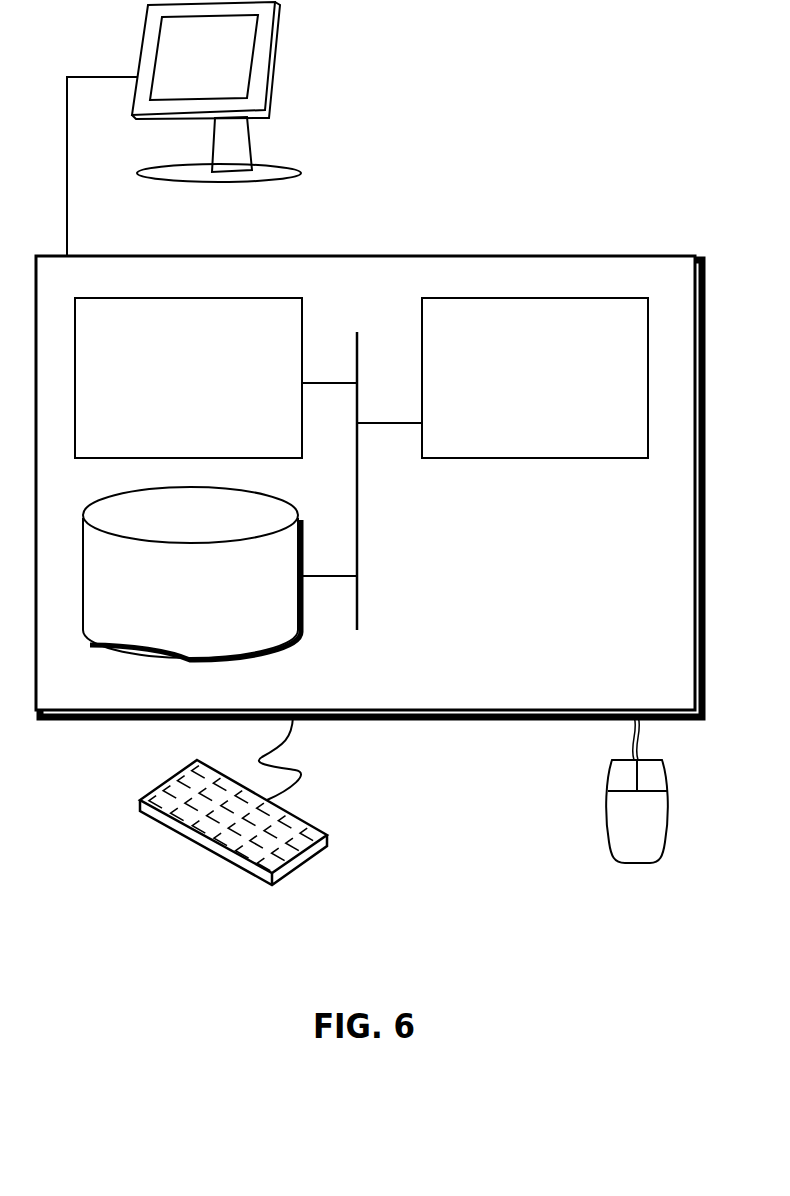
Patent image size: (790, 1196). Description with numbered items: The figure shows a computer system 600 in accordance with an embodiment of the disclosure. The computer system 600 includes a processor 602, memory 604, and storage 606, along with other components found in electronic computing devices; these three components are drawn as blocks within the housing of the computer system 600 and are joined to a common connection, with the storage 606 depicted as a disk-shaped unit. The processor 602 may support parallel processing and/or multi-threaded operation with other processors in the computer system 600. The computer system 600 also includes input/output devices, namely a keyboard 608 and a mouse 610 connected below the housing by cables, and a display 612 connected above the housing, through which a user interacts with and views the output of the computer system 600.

The computer system 600 is at (412, 235).
The processor 602 is at (535, 378).
The memory 604 is at (188, 378).
The storage 606 is at (192, 573).
The keyboard 608 is at (158, 823).
The mouse 610 is at (637, 790).
The display 612 is at (184, 129).